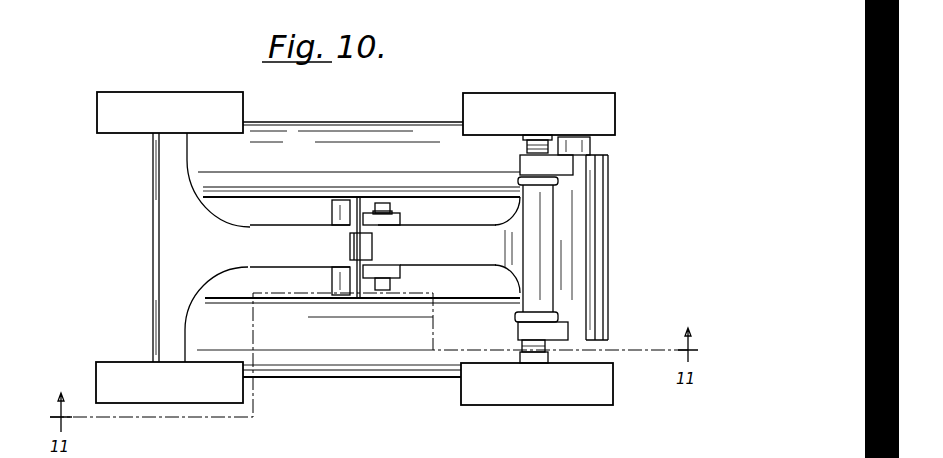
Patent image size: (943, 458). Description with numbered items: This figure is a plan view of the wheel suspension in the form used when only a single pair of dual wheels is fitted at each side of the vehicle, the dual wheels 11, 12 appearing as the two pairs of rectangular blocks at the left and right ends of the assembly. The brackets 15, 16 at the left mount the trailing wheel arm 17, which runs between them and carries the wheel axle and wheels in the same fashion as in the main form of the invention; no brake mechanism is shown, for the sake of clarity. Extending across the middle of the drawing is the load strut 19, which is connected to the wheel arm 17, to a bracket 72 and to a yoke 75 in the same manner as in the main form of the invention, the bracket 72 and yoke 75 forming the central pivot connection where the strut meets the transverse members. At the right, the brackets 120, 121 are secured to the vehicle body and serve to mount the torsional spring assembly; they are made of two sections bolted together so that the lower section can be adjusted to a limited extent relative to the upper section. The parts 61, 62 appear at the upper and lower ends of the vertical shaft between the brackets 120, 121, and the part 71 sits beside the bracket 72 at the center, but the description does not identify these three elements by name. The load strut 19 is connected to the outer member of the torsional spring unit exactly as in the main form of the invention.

The bracket 16 is at (110, 117).
The bracket 15 is at (122, 373).
The bracket 120 is at (513, 105).
The bracket 121 is at (553, 394).
The trailing wheel arm 17 is at (165, 248).
The dual wheel 12 is at (337, 143).
The dual wheel 11 is at (346, 362).
The load strut 19 is at (448, 221).
The upper bearing 61 is at (557, 165).
The lower bearing 62 is at (552, 332).
The pivot bracket 71 is at (332, 213).
The bracket 72 is at (360, 248).
The yoke 75 is at (392, 272).